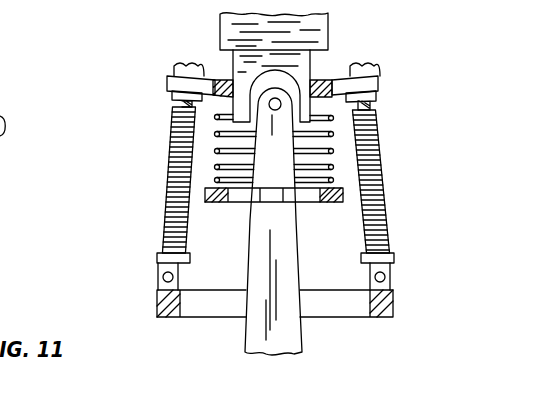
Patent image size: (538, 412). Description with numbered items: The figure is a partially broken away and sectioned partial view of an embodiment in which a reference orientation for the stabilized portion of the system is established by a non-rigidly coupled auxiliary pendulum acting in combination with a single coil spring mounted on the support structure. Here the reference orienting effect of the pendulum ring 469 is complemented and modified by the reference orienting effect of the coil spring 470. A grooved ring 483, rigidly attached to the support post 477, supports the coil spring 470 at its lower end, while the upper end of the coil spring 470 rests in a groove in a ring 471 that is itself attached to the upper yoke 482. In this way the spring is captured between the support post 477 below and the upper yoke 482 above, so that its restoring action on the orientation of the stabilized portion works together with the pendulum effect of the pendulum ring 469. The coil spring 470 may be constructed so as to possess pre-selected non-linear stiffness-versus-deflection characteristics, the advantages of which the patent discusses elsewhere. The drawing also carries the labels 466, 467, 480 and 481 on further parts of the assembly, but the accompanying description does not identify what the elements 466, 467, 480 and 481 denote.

The threaded adjusting rod 466 is at (170, 148).
The mounting bracket with nut 467 is at (170, 73).
The pendulum ring 469 is at (330, 308).
The coil spring 470 is at (212, 181).
The ring 471 is at (327, 82).
The support post 477 is at (258, 322).
The spring end 480 is at (334, 118).
The spring end 481 is at (216, 117).
The upper yoke 482 is at (327, 31).
The grooved ring 483 is at (205, 203).